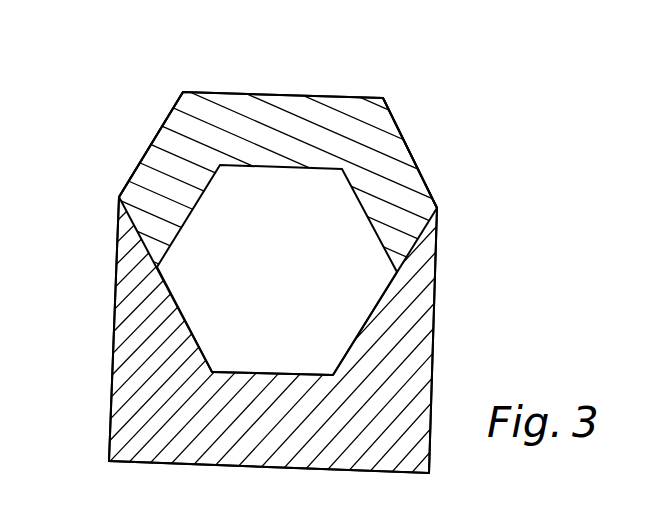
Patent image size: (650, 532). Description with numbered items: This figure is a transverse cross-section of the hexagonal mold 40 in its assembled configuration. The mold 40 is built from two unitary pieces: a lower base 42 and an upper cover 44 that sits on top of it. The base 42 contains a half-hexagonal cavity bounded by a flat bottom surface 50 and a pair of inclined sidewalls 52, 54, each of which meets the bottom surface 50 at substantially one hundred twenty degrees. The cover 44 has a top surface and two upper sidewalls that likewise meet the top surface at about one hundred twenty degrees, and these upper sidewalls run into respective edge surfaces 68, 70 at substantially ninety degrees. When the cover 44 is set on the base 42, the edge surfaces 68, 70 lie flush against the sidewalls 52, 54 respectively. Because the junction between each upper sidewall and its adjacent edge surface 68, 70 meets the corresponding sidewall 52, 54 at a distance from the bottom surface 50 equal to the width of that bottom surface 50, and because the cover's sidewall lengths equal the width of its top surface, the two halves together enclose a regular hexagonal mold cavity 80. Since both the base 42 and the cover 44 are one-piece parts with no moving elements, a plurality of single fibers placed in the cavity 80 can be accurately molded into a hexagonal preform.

The mold 40 is at (187, 42).
The lower base 42 is at (83, 395).
The upper cover 44 is at (427, 105).
The bottom surface 50 is at (268, 377).
The sidewall 52 is at (189, 312).
The sidewall 54 is at (368, 312).
The edge surface 68 is at (125, 222).
The edge surface 70 is at (428, 236).
The hexagonal mold cavity 80 is at (274, 286).